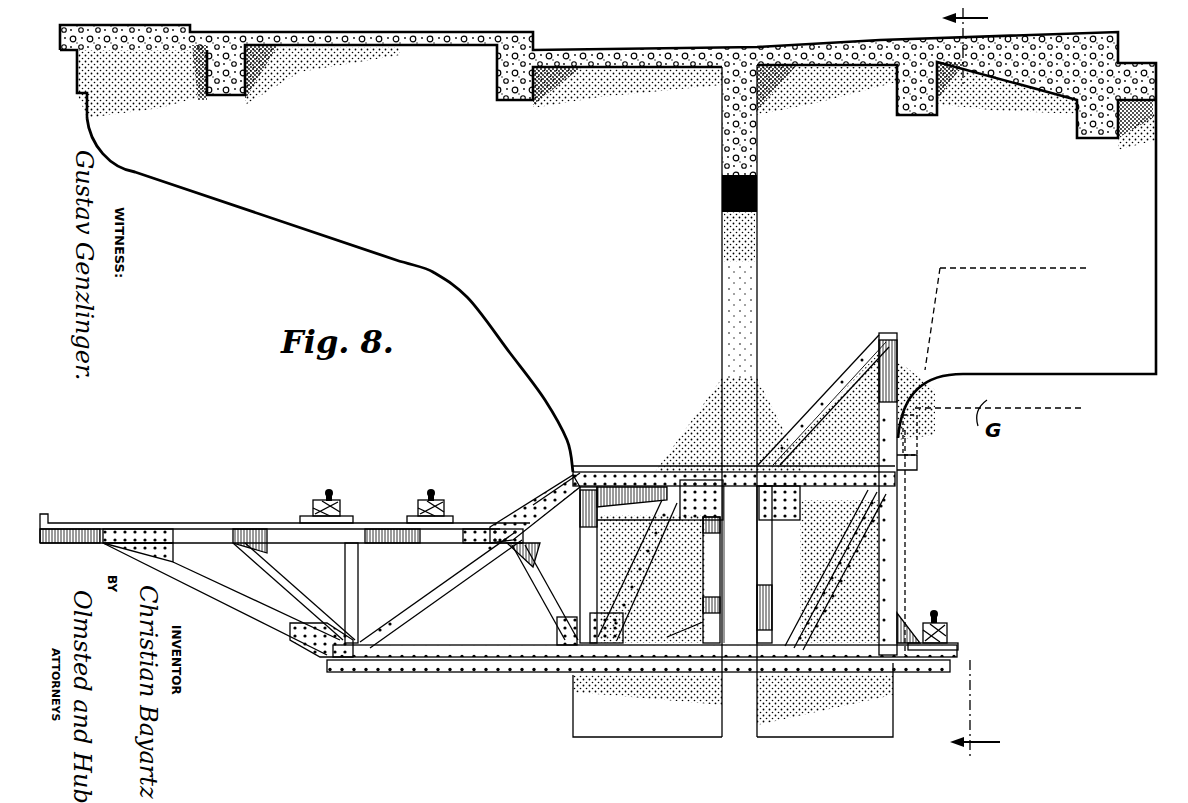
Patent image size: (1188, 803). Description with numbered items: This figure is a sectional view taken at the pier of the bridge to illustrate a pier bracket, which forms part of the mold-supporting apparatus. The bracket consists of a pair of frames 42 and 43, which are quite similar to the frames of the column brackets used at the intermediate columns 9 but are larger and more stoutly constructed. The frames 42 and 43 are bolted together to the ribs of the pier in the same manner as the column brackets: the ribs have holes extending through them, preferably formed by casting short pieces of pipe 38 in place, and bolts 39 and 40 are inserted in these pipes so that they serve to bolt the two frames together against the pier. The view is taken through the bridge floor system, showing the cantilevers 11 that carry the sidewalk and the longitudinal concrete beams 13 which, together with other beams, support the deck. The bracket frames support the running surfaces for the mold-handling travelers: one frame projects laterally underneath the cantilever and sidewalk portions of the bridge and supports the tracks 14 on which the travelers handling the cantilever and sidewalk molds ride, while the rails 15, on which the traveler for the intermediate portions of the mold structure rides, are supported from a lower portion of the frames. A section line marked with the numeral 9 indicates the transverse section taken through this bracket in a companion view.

The intermediate columns 9 is at (960, 383).
The cantilevers 11 is at (330, 295).
The longitudinal concrete beams 13 is at (748, 158).
The tracks 14 is at (430, 490).
The rails 15 is at (936, 612).
The short pieces of pipe 38 is at (742, 662).
The bolt 39 is at (655, 470).
The bolt 40 is at (700, 658).
The frame 42 is at (897, 566).
The frame 43 is at (432, 595).